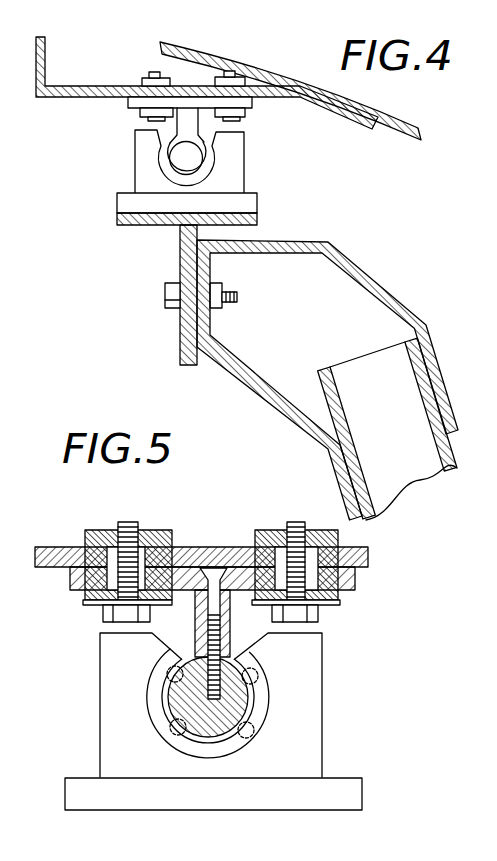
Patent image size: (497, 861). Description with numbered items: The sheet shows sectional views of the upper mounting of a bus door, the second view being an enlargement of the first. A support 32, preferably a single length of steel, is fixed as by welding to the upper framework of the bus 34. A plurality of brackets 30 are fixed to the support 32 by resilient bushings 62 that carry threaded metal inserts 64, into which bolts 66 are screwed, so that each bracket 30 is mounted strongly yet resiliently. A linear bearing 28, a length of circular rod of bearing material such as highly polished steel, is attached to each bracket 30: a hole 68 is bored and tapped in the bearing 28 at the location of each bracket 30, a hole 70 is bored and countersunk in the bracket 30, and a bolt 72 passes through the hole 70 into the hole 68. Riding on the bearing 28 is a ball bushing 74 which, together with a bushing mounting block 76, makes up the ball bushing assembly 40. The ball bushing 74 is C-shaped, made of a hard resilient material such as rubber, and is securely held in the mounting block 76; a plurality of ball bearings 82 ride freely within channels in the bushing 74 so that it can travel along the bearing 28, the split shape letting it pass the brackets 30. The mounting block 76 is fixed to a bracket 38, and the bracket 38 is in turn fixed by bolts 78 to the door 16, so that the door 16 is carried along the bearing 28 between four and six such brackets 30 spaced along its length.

In FIG. 4, the door 16 is at (414, 480).
In FIG. 5, the linear bearing 28 is at (215, 720).
In FIG. 4, the bracket 30 is at (183, 127).
In FIG. 5, the bracket 30 is at (230, 637).
In FIG. 4, the support 32 is at (83, 98).
In FIG. 5, the support 32 is at (47, 547).
In FIG. 4, the bus 34 is at (213, 53).
In FIG. 4, the bracket 38 is at (180, 260).
In FIG. 4, the ball bushing assembly 40 is at (262, 166).
In FIG. 5, the ball bushing assembly 40 is at (356, 690).
In FIG. 5, the resilient bushing 62 is at (76, 540).
In FIG. 5, the threaded metal insert 64 is at (150, 534).
In FIG. 5, the bolt 66 is at (103, 618).
In FIG. 5, the hole 68 is at (256, 698).
In FIG. 5, the hole 70 is at (194, 552).
In FIG. 5, the bolt 72 is at (198, 634).
In FIG. 5, the ball bushing 74 is at (153, 695).
In FIG. 4, the bushing mounting block 76 is at (143, 168).
In FIG. 5, the bushing mounting block 76 is at (308, 743).
In FIG. 4, the bolt 78 is at (173, 312).
In FIG. 5, the ball bearing 82 is at (181, 712).